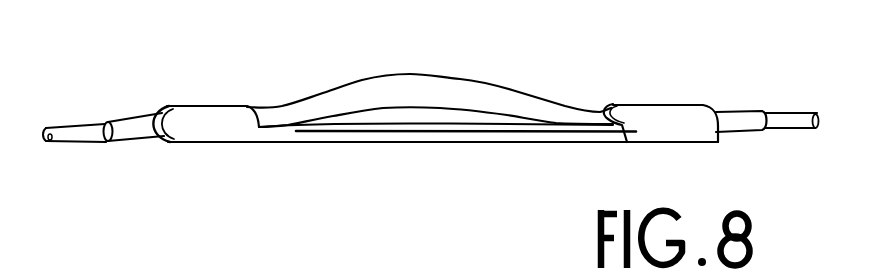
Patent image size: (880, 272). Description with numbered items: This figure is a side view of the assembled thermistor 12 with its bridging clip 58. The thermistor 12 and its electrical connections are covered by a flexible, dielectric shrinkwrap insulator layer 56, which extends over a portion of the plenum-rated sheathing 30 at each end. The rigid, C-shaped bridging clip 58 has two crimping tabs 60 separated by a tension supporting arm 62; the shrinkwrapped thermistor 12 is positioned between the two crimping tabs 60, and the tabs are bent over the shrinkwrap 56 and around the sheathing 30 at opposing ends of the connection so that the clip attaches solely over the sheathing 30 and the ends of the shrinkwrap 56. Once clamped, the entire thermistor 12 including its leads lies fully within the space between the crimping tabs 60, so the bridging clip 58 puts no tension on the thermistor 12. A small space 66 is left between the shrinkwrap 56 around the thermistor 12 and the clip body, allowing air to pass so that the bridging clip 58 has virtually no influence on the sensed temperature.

The thermistor 12 is at (514, 74).
The sheathing 30 is at (69, 129).
The insulator layer 56 is at (132, 120).
The bridging clip 58 is at (500, 147).
The crimping tabs 60 is at (213, 118).
The tension supporting arm 62 is at (295, 134).
The small space 66 is at (415, 116).